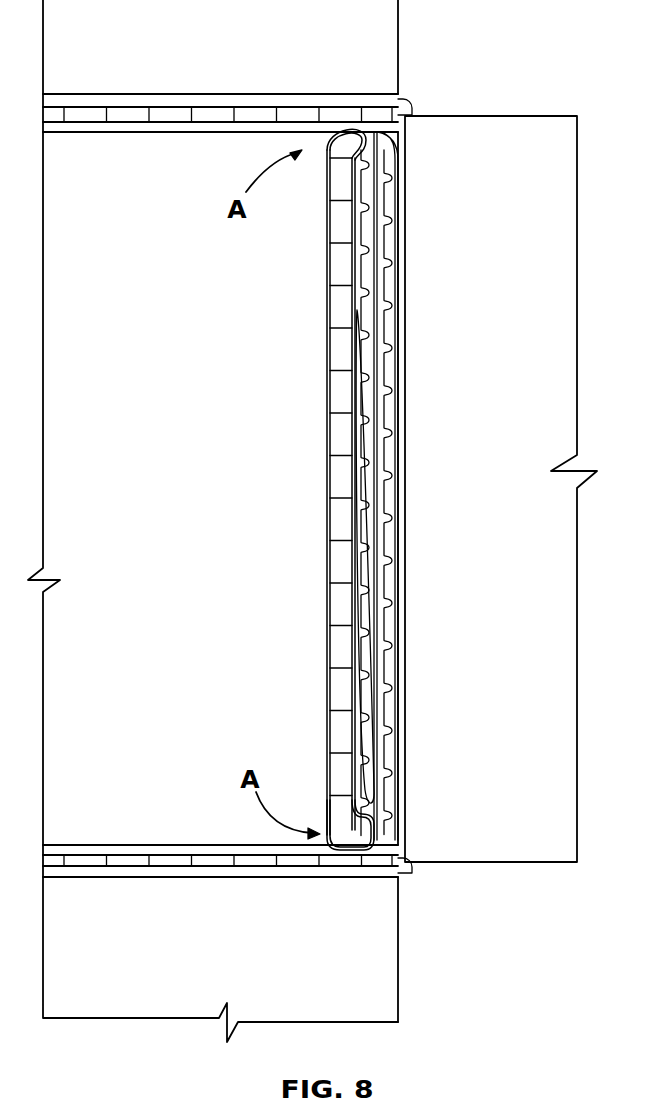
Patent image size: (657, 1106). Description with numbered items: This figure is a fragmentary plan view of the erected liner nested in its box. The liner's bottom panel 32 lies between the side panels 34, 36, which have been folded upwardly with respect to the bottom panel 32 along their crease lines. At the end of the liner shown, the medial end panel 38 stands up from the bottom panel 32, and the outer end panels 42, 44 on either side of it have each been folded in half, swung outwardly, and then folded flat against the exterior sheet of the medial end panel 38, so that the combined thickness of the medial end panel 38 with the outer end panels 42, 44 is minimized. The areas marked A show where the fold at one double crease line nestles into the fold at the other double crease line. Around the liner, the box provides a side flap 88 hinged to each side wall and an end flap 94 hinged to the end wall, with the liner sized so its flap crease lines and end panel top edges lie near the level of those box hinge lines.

The bottom panel 32 is at (131, 430).
The side panel 34 is at (151, 134).
The side panel 36 is at (131, 844).
The medial end panel 38 is at (327, 526).
The outer end panel 42 is at (388, 738).
The outer end panel 44 is at (398, 281).
The side flap 88 is at (189, 38).
The end flap 94 is at (476, 508).